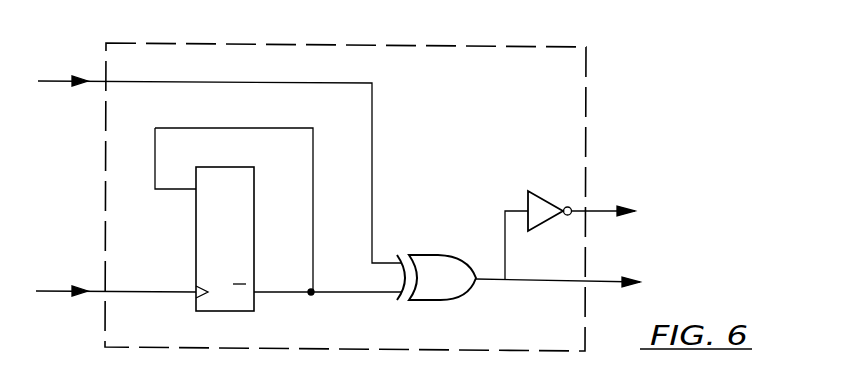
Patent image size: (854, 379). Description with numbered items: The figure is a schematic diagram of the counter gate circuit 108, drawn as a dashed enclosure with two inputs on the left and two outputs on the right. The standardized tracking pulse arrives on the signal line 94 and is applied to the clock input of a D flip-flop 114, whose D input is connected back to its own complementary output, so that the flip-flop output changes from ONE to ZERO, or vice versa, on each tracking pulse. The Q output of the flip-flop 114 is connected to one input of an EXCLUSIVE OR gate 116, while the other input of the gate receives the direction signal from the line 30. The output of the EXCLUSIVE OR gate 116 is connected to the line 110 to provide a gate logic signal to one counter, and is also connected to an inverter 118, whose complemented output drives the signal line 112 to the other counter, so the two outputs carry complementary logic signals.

The line 30 is at (58, 81).
The signal line 94 is at (54, 291).
The counter gate circuit 108 is at (600, 100).
The signal line 110 is at (617, 281).
The signal line 112 is at (613, 211).
The D flip-flop 114 is at (256, 190).
The EXCLUSIVE OR circuit 116 is at (446, 255).
The inverter 118 is at (540, 191).